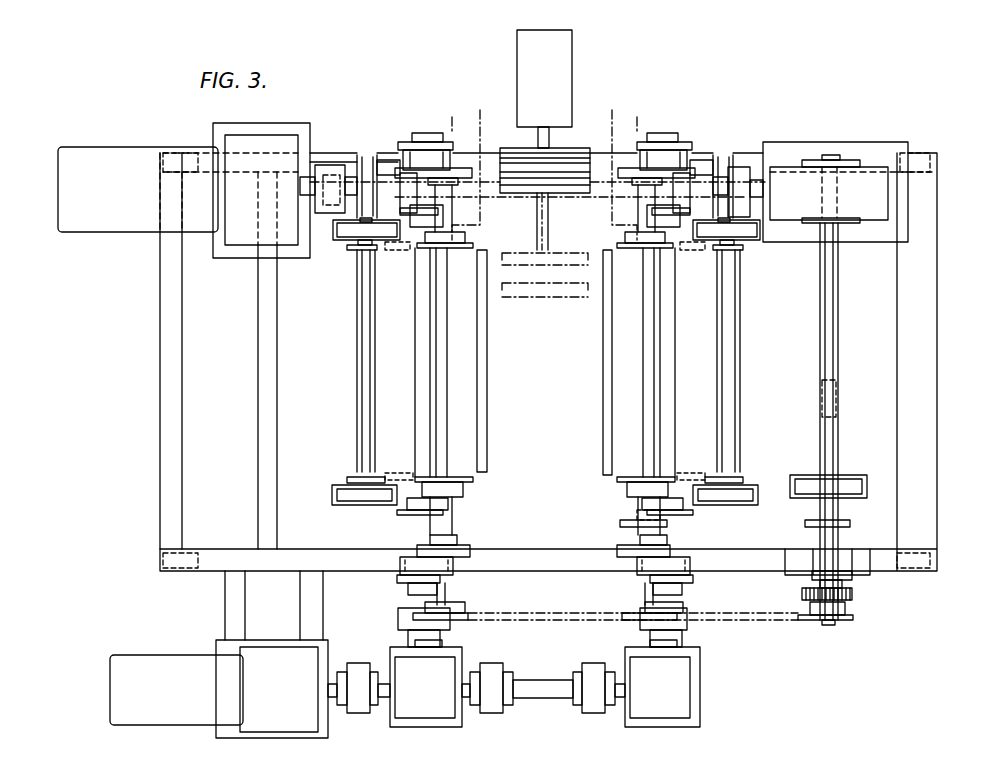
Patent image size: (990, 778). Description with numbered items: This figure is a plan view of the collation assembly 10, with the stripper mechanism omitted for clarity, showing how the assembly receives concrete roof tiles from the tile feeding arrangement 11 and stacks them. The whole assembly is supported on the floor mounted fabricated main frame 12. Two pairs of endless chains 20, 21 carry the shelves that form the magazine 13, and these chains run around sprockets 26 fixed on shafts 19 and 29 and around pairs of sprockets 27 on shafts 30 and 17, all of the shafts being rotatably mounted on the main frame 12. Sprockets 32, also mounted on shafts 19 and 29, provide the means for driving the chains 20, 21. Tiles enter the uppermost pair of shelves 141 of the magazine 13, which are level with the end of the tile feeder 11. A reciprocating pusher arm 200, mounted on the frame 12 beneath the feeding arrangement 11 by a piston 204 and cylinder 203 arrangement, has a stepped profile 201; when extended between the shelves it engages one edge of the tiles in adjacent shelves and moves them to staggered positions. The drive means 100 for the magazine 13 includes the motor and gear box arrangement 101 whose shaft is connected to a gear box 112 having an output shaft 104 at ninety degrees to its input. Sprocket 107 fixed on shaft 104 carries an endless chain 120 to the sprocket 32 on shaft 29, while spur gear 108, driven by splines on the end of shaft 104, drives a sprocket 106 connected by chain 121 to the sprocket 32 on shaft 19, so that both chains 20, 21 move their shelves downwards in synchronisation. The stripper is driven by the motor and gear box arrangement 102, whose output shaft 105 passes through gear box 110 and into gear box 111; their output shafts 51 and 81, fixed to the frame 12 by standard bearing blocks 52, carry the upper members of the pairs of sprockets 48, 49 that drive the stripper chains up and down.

The collation assembly 10 is at (765, 72).
The tile feeding arrangement 11 is at (480, 112).
The main frame 12 is at (163, 512).
The magazine 13 is at (557, 342).
The shaft 17 is at (357, 368).
The shaft 19 is at (645, 403).
The endless chains 20 is at (688, 250).
The endless chains 21 is at (393, 248).
The sprockets 26 is at (477, 243).
The sprockets 27 is at (347, 245).
The shaft 29 is at (445, 377).
The shaft 30 is at (730, 402).
The sprockets 32 is at (462, 615).
The sprockets 48 is at (395, 515).
The sprockets 49 is at (400, 200).
The shaft 51 is at (418, 368).
The bearing blocks 52 is at (440, 220).
The shaft 81 is at (670, 352).
The drive means 100 is at (444, 120).
The motor and gear box arrangement 101 is at (80, 232).
The motor and gear box arrangement 102 is at (153, 660).
The output shaft 104 is at (833, 365).
The output shaft 105 is at (543, 690).
The sprocket 106 is at (845, 525).
The sprocket 107 is at (853, 620).
The spur gear 108 is at (855, 593).
The gear box 110 is at (432, 712).
The gear box 111 is at (675, 702).
The gear box 112 is at (858, 180).
The endless chain 120 is at (745, 622).
The endless chain 121 is at (745, 525).
The uppermost pair of shelves 141 is at (603, 467).
The reciprocating pusher arm 200 is at (588, 120).
The stepped profile 201 is at (637, 140).
The cylinder 203 is at (517, 48).
The piston 204 is at (548, 127).